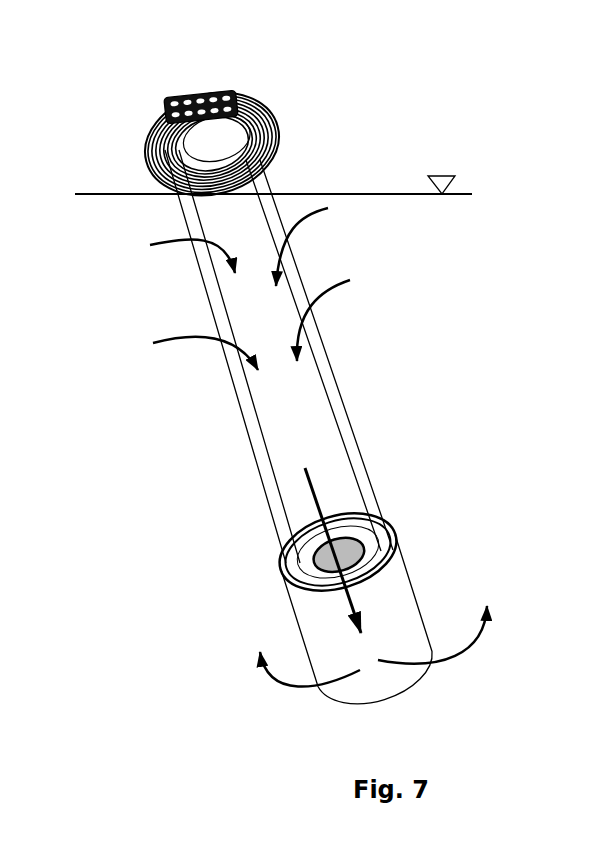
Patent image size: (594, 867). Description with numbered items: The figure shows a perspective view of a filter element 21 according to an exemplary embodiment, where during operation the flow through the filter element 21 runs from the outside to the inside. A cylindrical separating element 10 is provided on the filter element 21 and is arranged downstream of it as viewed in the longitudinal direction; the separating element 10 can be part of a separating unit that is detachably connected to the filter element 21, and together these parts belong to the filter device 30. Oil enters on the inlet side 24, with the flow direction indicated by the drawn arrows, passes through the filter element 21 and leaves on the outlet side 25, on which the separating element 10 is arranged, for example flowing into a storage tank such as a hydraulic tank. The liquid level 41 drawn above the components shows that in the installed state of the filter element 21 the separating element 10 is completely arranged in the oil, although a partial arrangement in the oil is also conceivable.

The filter element 21 is at (312, 137).
The liquid level 41 is at (458, 176).
The inlet side 24 is at (148, 378).
The separating element 10 is at (421, 567).
The filter device 30 is at (403, 595).
The outlet side 25 is at (251, 640).